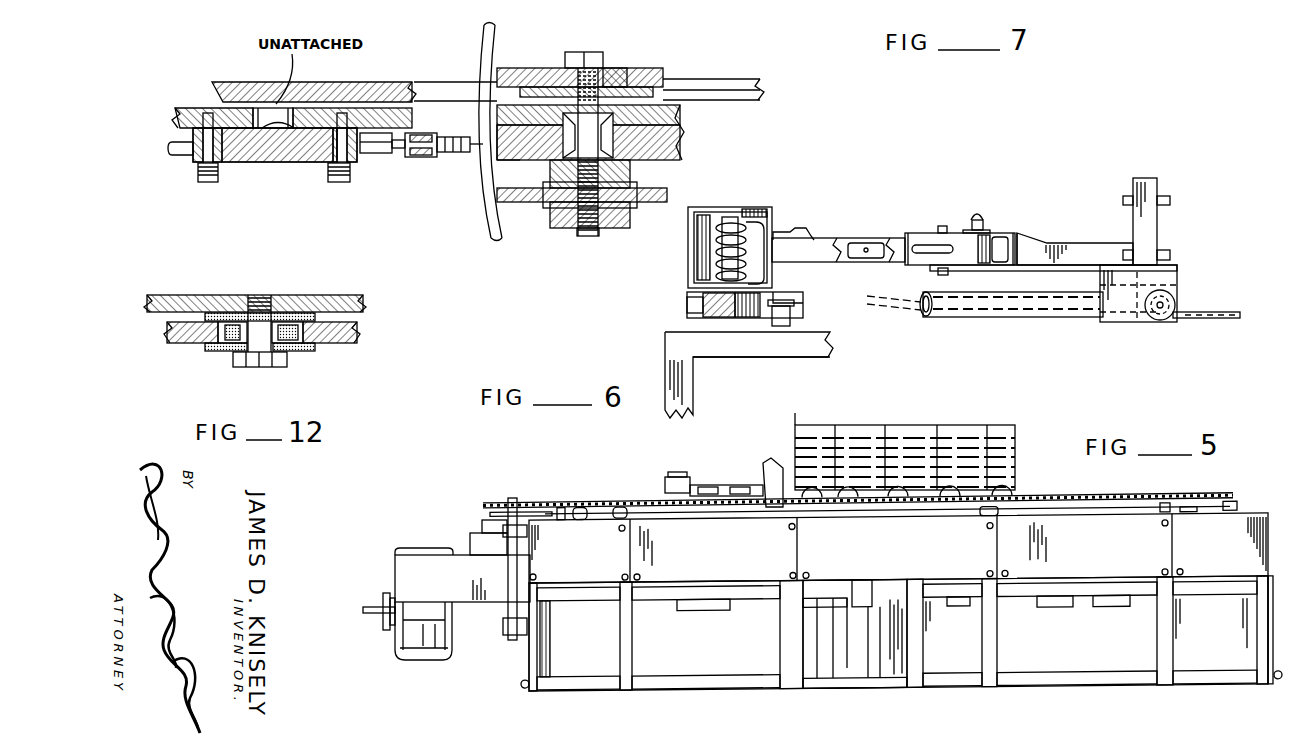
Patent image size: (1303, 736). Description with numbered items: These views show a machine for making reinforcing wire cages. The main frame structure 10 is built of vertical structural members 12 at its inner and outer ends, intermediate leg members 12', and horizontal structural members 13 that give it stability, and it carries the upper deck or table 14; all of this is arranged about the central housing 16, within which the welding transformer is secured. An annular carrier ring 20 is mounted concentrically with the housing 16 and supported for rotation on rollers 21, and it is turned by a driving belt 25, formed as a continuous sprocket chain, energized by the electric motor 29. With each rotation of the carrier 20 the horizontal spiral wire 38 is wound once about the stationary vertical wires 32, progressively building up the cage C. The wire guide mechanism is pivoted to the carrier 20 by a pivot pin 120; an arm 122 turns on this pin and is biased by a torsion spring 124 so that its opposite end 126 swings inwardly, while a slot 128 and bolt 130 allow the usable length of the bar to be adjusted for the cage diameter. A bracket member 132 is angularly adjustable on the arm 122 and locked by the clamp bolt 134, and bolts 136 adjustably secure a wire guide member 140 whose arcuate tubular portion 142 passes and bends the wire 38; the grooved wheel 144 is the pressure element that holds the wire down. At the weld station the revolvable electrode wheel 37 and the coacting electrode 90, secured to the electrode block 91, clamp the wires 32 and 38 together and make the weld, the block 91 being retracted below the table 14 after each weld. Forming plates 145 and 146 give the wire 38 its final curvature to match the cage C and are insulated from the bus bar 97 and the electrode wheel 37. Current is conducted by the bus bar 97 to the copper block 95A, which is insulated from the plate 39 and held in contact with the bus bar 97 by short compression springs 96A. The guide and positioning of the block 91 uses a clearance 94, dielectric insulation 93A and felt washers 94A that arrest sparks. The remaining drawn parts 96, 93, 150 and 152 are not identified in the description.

In FIG. 6, the bus bar 97 is at (372, 82).
In FIG. 6, the forming plate 145 is at (517, 68).
In FIG. 6, the nut 152 is at (612, 67).
In FIG. 6, the washer 150 is at (658, 88).
In FIG. 6, the plate 39 is at (683, 118).
In FIG. 12, the plate 39 is at (322, 295).
In FIG. 6, the electrode wheel 37 is at (682, 148).
In FIG. 6, the vertical wires 32 is at (497, 155).
In FIG. 6, the forming plate 146 is at (668, 197).
In FIG. 6, the bolt 96 is at (195, 157).
In FIG. 6, the copper block 95A is at (242, 163).
In FIG. 6, the compression springs 96A is at (330, 167).
In FIG. 6, the coacting electrode 90 is at (458, 160).
In FIG. 6, the electrode block 91 is at (415, 158).
In FIG. 12, the electrode block 91 is at (345, 338).
In FIG. 6, the spiral wire 38 is at (483, 190).
In FIG. 7, the spiral wire 38 is at (913, 318).
In FIG. 12, the dielectric insulation 93A is at (256, 296).
In FIG. 12, the felt washers 94A is at (207, 316).
In FIG. 12, the clearance 94 is at (224, 340).
In FIG. 12, the nut 93 is at (284, 367).
In FIG. 7, the pivot pin 120 is at (706, 243).
In FIG. 5, the pivot pin 120 is at (676, 477).
In FIG. 7, the torsion spring 124 is at (790, 232).
In FIG. 7, the arm 122 is at (800, 255).
In FIG. 5, the arm 122 is at (735, 483).
In FIG. 7, the bolt 130 is at (868, 240).
In FIG. 7, the slot 128 is at (917, 245).
In FIG. 7, the opposite end of bar 126 is at (968, 250).
In FIG. 7, the clamp bolt 134 is at (987, 225).
In FIG. 7, the bracket member 132 is at (1077, 250).
In FIG. 7, the bolts 136 is at (1160, 244).
In FIG. 7, the grooved wheel 144 is at (1178, 305).
In FIG. 7, the tubular portion 142 is at (990, 318).
In FIG. 7, the wire guide member 140 is at (1096, 330).
In FIG. 7, the annular carrier ring 20 is at (712, 316).
In FIG. 7, the frame structure 10 is at (762, 350).
In FIG. 5, the frame structure 10 is at (670, 516).
In FIG. 5, the cage C is at (908, 420).
In FIG. 5, the driving belt 25 is at (545, 500).
In FIG. 5, the table 14 is at (592, 501).
In FIG. 5, the rollers 21 is at (632, 517).
In FIG. 5, the electric motor 29 is at (440, 640).
In FIG. 5, the intermediate leg members 12' is at (650, 636).
In FIG. 5, the vertical structural member 12 is at (891, 634).
In FIG. 5, the horizontal structural members 13 is at (716, 684).
In FIG. 5, the central housing 16 is at (903, 683).